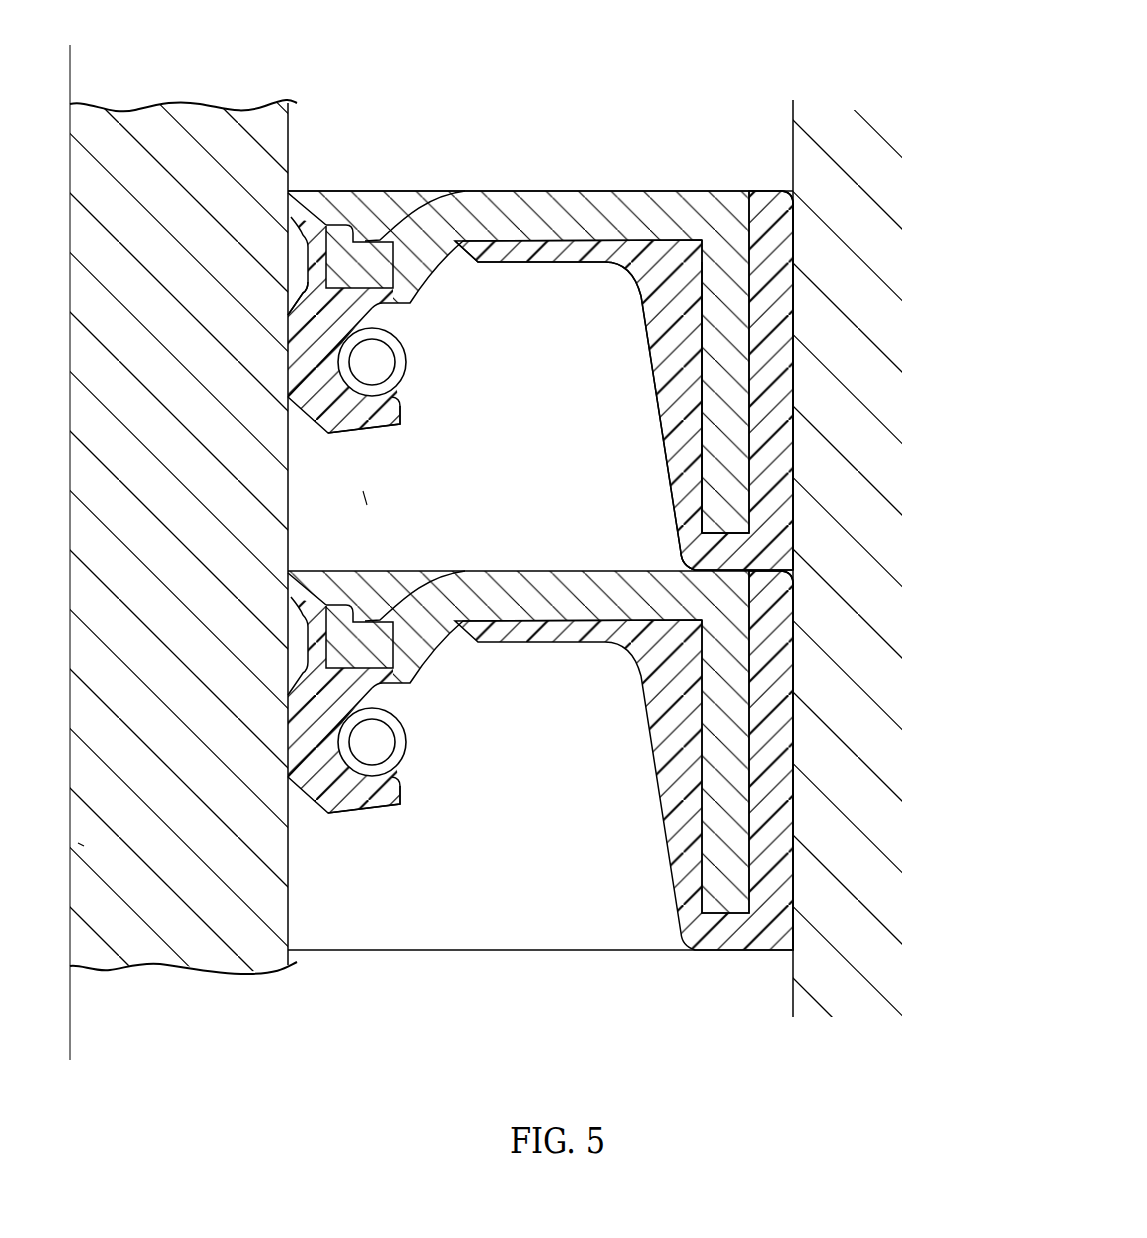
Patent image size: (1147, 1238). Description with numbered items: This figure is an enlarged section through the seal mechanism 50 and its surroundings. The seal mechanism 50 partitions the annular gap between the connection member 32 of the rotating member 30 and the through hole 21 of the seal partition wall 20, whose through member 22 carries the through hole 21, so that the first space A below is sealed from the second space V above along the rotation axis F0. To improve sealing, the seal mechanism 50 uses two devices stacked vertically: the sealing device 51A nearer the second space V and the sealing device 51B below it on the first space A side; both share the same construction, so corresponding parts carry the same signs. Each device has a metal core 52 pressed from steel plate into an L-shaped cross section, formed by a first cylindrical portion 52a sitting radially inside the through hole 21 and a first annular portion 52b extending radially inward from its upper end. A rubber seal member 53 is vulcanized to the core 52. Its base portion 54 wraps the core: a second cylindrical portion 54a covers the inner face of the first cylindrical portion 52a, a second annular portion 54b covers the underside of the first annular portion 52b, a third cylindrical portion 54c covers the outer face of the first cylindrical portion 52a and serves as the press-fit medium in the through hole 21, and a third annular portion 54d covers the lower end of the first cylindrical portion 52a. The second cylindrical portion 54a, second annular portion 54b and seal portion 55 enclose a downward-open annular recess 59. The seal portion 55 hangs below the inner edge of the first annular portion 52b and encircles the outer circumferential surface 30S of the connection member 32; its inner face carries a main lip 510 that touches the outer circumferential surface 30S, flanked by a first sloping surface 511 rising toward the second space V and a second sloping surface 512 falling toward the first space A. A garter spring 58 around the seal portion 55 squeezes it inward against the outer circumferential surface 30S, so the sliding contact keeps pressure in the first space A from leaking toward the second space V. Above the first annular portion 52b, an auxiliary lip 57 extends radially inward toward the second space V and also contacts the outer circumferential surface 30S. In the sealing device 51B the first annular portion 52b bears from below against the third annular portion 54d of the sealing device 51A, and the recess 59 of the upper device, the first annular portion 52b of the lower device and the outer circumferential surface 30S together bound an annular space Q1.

The seal mechanism 50 is at (497, 104).
The sealing device 51A is at (510, 164).
The sealing device 51B is at (656, 910).
The core 52 is at (636, 504).
The first cylindrical portion 52a is at (727, 457).
The first annular portion 52b is at (642, 200).
The seal member 53 is at (795, 320).
The base portion 54 is at (710, 536).
The second cylindrical portion 54a is at (678, 390).
The second annular portion 54b is at (580, 252).
The third cylindrical portion 54c is at (770, 508).
The third annular portion 54d is at (722, 559).
The seal portion 55 is at (368, 440).
The auxiliary lip 57 is at (289, 219).
The garter spring 58 is at (342, 341).
The annular recess 59 is at (442, 321).
The main lip 510 is at (289, 363).
The first sloping surface 511 is at (289, 291).
The second sloping surface 512 is at (290, 410).
The through hole 21 is at (793, 102).
The through member 22 is at (866, 524).
The seal partition wall 20 is at (866, 524).
The rotating member 30 is at (223, 575).
The connection member 32 is at (223, 575).
The outer circumferential surface 30S is at (297, 957).
The second space V is at (445, 71).
The intermediate space I is at (530, 456).
The first space A is at (544, 1046).
The annular space Q1 is at (366, 499).
The rotation axis F0 is at (78, 843).